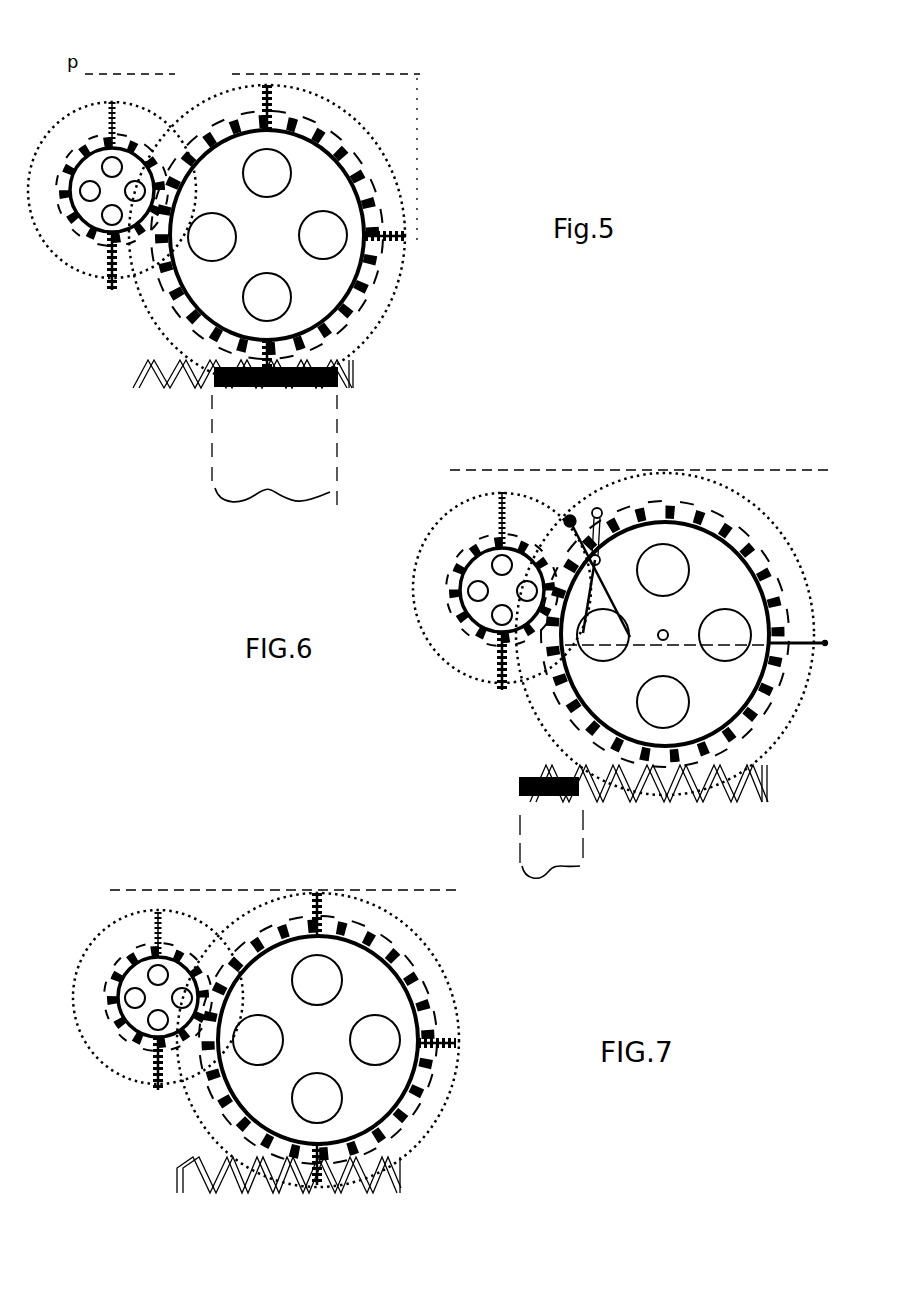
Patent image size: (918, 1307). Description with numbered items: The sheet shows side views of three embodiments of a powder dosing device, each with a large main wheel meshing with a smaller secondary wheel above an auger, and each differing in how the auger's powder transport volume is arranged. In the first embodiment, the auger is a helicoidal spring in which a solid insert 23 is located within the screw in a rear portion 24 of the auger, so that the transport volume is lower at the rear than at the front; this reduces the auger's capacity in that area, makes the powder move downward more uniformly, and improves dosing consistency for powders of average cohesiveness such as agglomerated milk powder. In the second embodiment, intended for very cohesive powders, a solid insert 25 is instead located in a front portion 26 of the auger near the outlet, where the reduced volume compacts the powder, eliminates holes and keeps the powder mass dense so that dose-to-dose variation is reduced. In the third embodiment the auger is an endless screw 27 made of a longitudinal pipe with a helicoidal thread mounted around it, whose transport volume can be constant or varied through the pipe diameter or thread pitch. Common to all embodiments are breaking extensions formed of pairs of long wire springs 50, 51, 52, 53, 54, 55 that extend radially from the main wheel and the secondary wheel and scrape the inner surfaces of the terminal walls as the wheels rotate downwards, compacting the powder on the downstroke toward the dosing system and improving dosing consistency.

In FIG. 5, the solid insert 23 is at (300, 388).
In FIG. 5, the rear portion of the auger 24 is at (282, 496).
In FIG. 6, the solid insert 25 is at (520, 778).
In FIG. 6, the front portion of the auger 26 is at (555, 878).
In FIG. 7, the endless screw 27 is at (253, 1186).
In FIG. 5, the long wire spring 50 is at (268, 108).
In FIG. 5, the long wire spring 51 is at (403, 232).
In FIG. 5, the long wire spring 52 is at (288, 348).
In FIG. 5, the long wire spring 53 is at (175, 160).
In FIG. 5, the long wire spring 54 is at (124, 104).
In FIG. 5, the long wire spring 55 is at (108, 283).